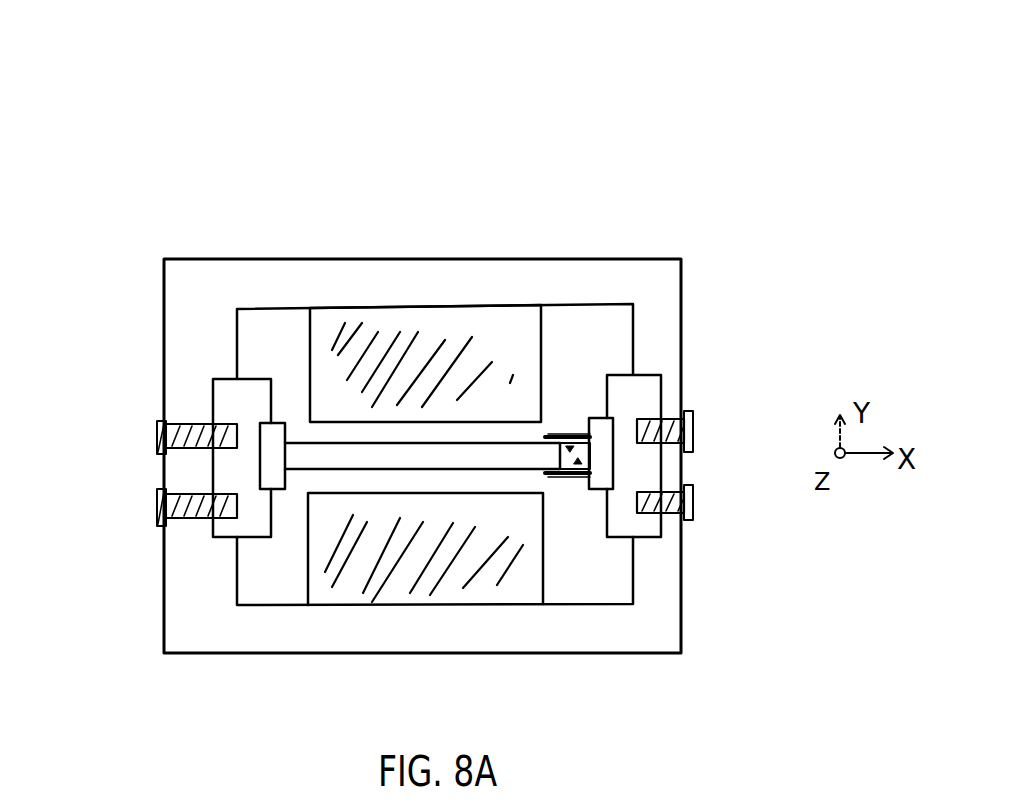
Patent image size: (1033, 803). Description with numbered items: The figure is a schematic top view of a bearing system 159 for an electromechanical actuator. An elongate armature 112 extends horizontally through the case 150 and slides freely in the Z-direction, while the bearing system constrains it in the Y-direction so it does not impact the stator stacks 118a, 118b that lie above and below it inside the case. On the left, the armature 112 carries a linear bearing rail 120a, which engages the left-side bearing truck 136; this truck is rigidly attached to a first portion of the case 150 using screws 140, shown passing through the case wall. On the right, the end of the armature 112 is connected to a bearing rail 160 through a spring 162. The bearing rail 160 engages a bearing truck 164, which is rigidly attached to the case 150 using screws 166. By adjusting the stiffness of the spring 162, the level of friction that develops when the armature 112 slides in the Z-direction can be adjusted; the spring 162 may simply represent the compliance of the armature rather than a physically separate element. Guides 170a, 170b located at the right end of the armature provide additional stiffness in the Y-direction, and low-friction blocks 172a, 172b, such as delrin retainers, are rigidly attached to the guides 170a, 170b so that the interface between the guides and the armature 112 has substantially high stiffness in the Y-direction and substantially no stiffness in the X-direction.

The bearing system 159 is at (452, 95).
The case 150 is at (413, 275).
The stack 118a is at (340, 360).
The stack 118b is at (360, 567).
The left-side bearing truck 136 is at (233, 403).
The linear bearing rail 120a is at (277, 445).
The armature 112 is at (410, 455).
The screws 140 is at (150, 510).
The bearing rail 160 is at (608, 418).
The bearing truck 164 is at (641, 399).
The screws 166 is at (692, 497).
The low-friction block 172a is at (548, 437).
The low-friction block 172b is at (545, 474).
The spring 162 is at (578, 458).
The guide 170a is at (575, 423).
The guide 170b is at (564, 470).